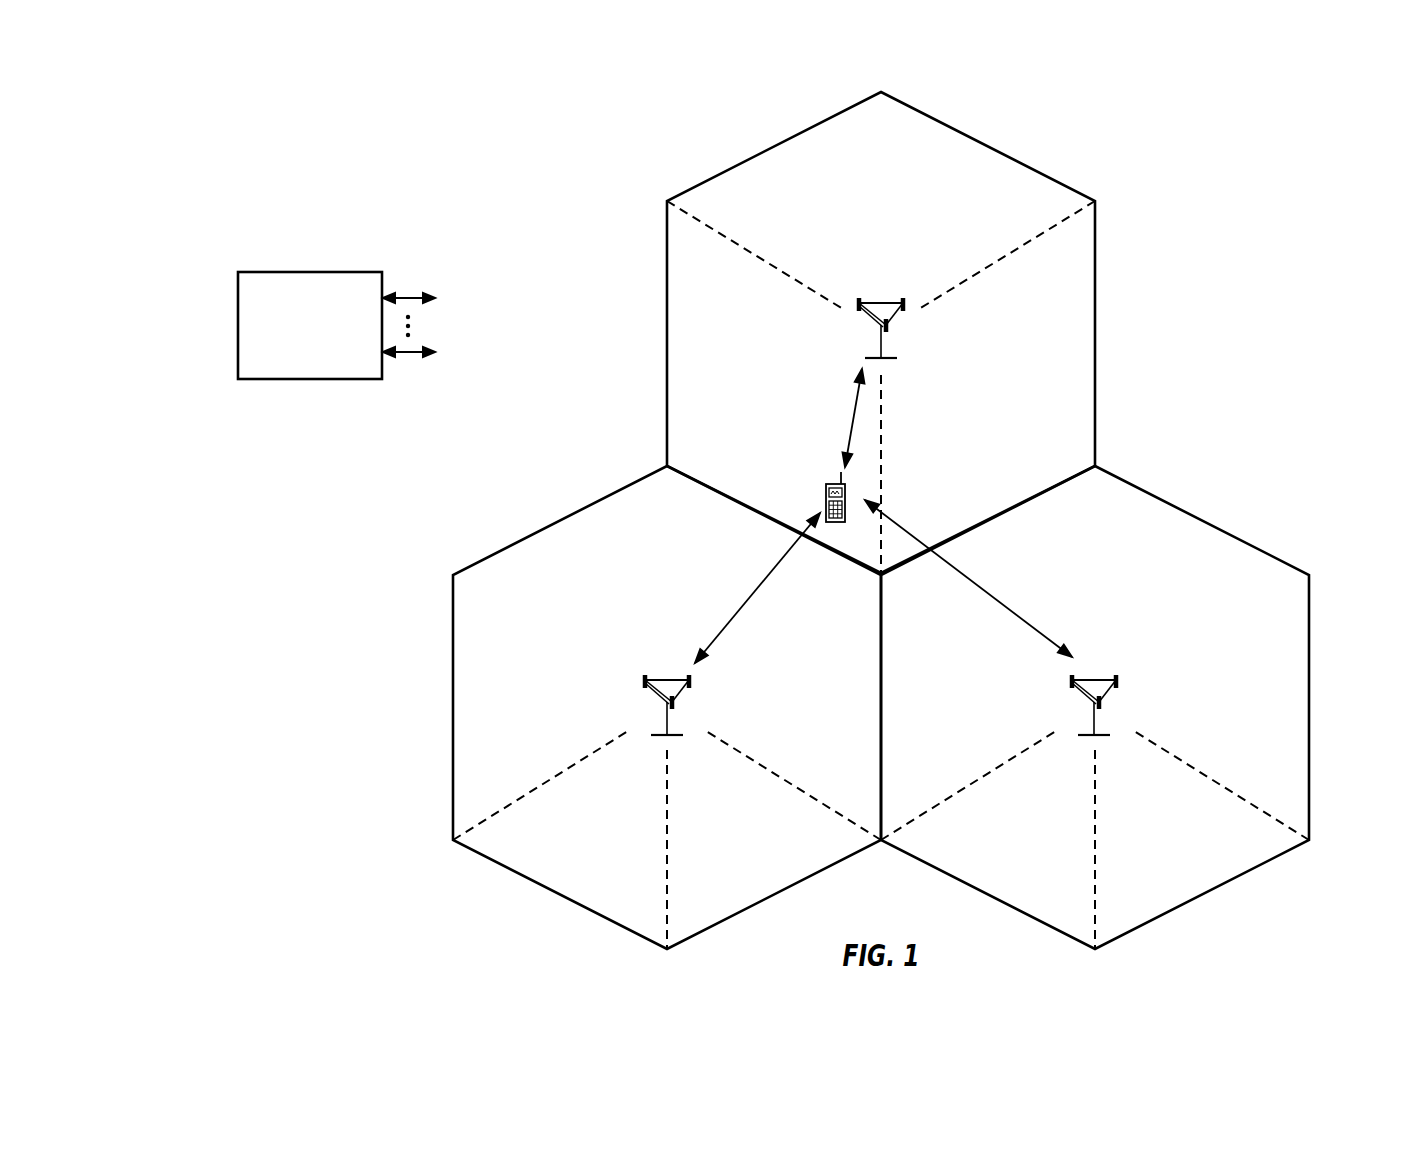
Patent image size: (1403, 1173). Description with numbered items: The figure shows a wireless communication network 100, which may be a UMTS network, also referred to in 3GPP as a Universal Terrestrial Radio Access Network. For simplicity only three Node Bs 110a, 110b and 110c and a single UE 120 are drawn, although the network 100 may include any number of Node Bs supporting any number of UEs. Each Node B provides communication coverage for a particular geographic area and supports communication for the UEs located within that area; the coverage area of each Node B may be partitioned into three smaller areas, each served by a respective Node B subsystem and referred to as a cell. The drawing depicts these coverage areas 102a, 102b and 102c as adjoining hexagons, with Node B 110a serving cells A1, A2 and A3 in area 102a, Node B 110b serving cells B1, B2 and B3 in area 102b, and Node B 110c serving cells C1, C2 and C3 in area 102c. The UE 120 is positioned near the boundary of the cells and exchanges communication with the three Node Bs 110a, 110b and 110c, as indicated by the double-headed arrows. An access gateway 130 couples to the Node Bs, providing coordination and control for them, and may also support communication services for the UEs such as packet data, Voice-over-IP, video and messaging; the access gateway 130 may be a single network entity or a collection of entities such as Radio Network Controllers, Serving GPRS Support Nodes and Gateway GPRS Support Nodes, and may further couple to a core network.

The wireless communication network 100 is at (1250, 156).
The Node B coverage area A 102a is at (988, 145).
The Node B coverage area B 102b is at (559, 520).
The Node B coverage area C 102c is at (1197, 520).
The Node B 110a is at (879, 302).
The Node B 110b is at (657, 679).
The Node B 110c is at (1098, 679).
The UE 120 is at (826, 495).
The access gateway 130 is at (300, 272).